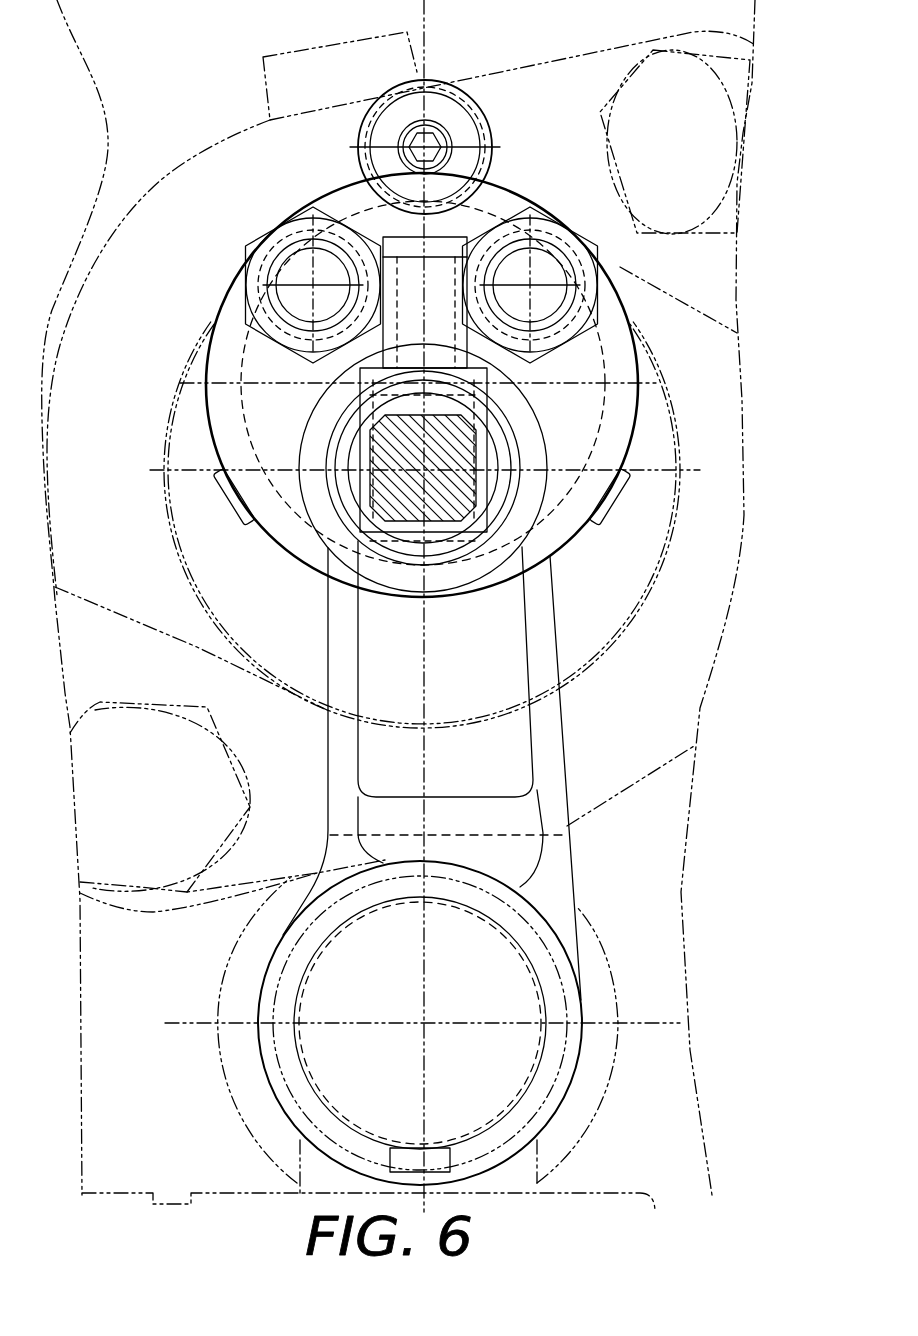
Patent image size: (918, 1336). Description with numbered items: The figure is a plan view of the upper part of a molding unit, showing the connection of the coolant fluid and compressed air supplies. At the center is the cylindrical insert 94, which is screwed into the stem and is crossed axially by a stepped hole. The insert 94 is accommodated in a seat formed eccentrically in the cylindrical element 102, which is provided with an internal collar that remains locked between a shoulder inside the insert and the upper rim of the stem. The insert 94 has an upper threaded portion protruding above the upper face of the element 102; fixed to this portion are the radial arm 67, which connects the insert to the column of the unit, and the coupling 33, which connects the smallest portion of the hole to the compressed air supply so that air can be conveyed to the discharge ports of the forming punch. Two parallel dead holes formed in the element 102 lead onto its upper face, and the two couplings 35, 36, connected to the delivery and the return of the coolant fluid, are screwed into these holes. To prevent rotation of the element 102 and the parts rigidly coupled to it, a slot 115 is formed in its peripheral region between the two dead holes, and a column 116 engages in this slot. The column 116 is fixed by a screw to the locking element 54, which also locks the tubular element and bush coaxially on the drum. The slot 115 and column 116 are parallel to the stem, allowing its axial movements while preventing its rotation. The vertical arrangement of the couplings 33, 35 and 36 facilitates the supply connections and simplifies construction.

The coupling 33 is at (395, 445).
The coupling 35 is at (298, 224).
The coupling 36 is at (578, 246).
The locking element 54 is at (658, 869).
The arm 67 is at (565, 750).
The cylindrical insert 94 is at (490, 525).
The cylindrical element 102 is at (635, 433).
The slot 115 is at (450, 197).
The column 116 is at (452, 85).